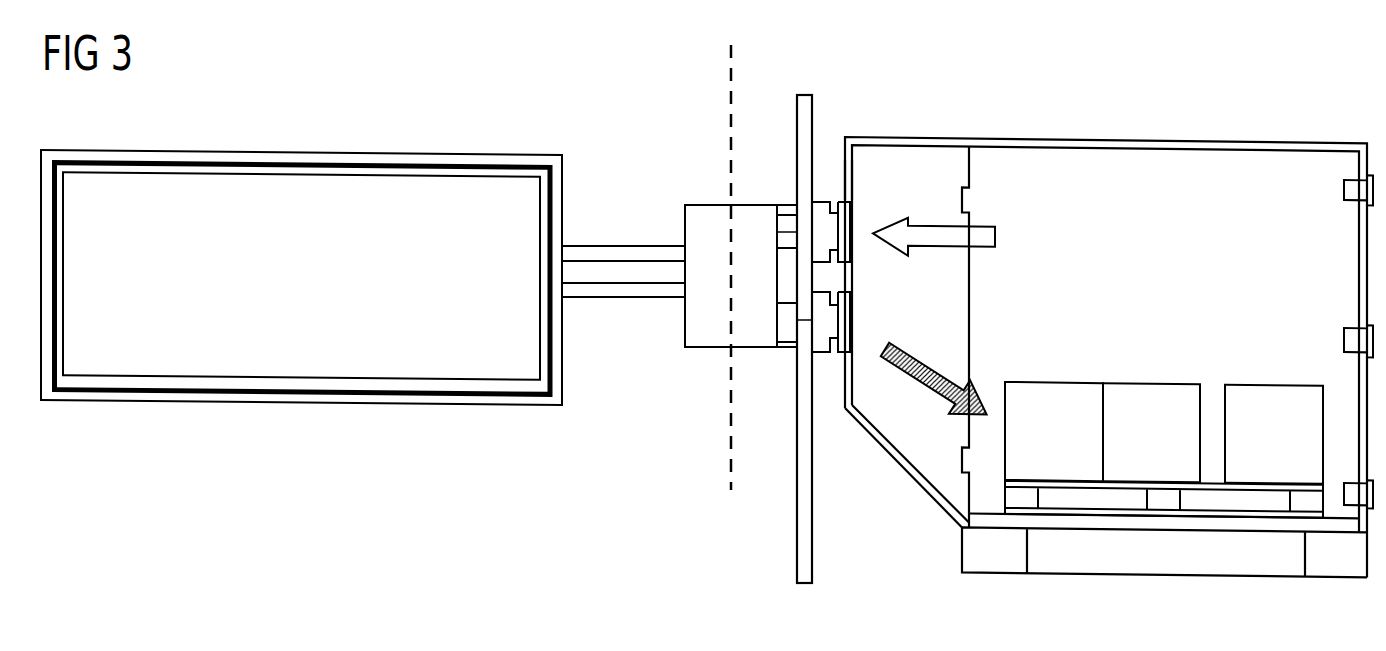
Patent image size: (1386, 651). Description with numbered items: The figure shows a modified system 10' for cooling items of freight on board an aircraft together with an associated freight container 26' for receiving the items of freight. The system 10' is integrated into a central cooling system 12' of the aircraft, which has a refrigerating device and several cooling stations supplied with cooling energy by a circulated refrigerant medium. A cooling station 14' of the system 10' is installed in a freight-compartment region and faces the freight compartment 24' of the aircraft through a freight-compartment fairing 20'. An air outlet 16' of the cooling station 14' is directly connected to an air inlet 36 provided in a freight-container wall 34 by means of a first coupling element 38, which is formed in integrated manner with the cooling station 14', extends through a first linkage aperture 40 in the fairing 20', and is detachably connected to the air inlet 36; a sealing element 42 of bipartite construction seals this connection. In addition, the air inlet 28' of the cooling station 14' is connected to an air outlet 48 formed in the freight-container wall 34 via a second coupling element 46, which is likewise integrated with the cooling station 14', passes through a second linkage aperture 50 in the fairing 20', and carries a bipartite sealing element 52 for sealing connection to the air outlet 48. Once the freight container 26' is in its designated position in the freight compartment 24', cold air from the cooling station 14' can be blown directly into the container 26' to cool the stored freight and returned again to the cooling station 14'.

The system for cooling items of freight 10' is at (615, 181).
The central cooling system 12' is at (301, 226).
The cooling station 14' is at (720, 244).
The air outlet 16' is at (767, 377).
The freight-compartment fairing 20' is at (769, 349).
The freight compartment 24' is at (1116, 300).
The freight container 26' is at (1109, 326).
The air inlet 28' is at (767, 174).
The freight-container wall 34 is at (852, 167).
The air inlet 36 is at (840, 356).
The first coupling element 38 is at (788, 330).
The first linkage aperture 40 is at (805, 320).
The sealing element 42 is at (825, 355).
The second coupling element 46 is at (788, 216).
The air outlet 48 is at (846, 217).
The second linkage aperture 50 is at (795, 236).
The sealing element 52 is at (823, 201).